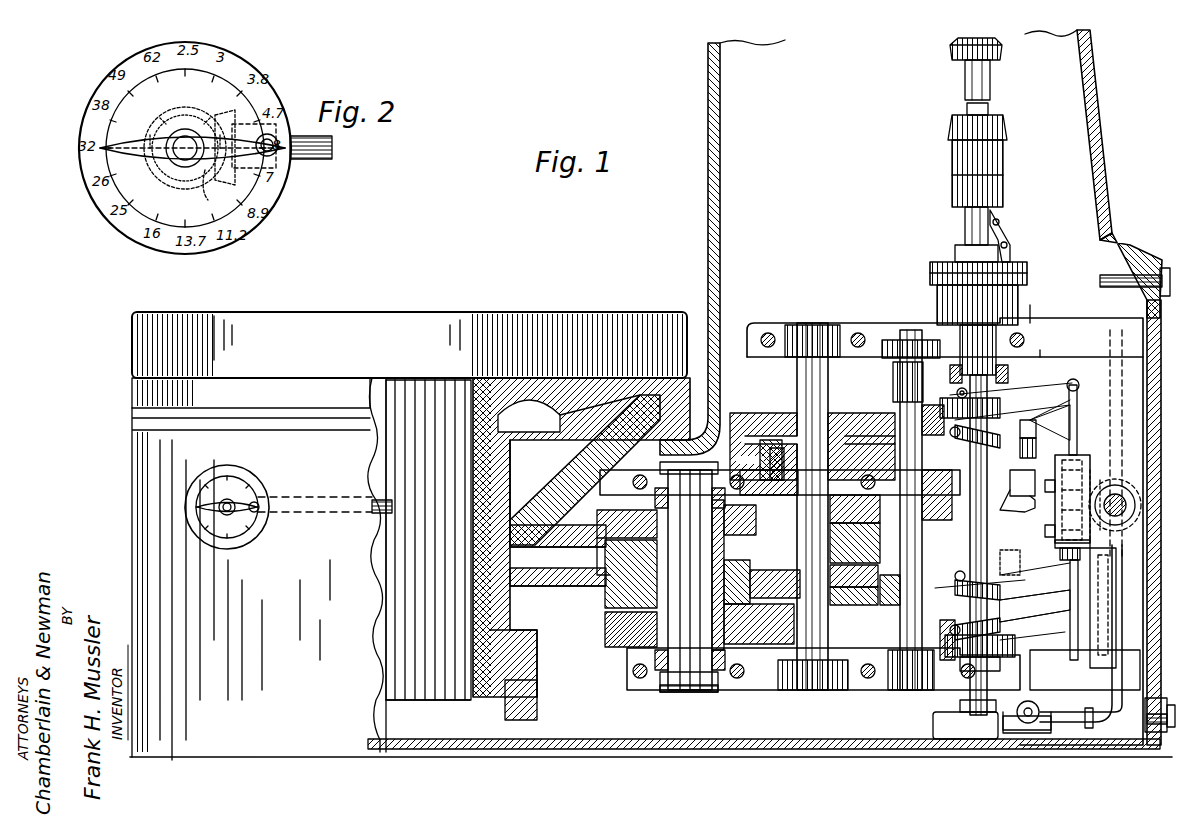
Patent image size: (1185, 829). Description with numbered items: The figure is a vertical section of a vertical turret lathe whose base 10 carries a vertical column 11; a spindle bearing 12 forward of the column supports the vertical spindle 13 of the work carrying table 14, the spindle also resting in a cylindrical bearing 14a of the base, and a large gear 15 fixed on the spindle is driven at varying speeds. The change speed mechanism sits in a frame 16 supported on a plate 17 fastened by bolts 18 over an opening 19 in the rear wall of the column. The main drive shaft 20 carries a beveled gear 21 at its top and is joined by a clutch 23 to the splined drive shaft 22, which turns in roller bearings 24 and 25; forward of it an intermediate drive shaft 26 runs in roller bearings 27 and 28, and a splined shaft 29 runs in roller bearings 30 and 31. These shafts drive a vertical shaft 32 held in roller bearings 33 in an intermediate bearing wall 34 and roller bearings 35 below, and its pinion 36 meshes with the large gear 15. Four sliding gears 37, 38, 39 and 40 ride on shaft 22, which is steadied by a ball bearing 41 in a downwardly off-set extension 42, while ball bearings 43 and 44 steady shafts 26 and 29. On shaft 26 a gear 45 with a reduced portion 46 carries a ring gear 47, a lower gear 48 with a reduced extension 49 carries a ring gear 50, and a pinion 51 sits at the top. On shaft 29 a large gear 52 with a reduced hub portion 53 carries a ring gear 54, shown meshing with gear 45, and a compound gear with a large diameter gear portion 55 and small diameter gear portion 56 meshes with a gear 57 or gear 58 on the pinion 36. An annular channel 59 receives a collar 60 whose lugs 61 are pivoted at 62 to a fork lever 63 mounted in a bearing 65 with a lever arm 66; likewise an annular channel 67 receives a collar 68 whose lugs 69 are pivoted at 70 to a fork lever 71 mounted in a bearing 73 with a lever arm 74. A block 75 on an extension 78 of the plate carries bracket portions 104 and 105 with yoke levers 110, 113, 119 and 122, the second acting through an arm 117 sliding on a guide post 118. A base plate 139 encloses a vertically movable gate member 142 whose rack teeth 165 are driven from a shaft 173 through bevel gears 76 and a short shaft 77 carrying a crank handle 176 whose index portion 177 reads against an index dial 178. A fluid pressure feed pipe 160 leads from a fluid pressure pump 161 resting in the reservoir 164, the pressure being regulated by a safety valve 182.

In FIG. 1, the base 10 is at (335, 745).
In FIG. 1, the vertical column 11 is at (720, 172).
In FIG. 1, the spindle bearing 12 is at (522, 455).
In FIG. 1, the vertical spindle 13 is at (500, 486).
In FIG. 1, the work carrying table 14 is at (392, 330).
In FIG. 1, the cylindrical bearing 14a is at (500, 645).
In FIG. 1, the large gear 15 is at (520, 588).
In FIG. 1, the frame 16 is at (1062, 330).
In FIG. 1, the plate 17 is at (1148, 420).
In FIG. 1, the bolts 18 is at (1145, 265).
In FIG. 1, the opening 19 is at (1108, 325).
In FIG. 1, the main drive shaft 20 is at (965, 80).
In FIG. 1, the beveled gear 21 is at (950, 46).
In FIG. 1, the drive shaft 22 is at (1000, 345).
In FIG. 1, the clutch 23 is at (1010, 270).
In FIG. 1, the roller bearing 24 is at (1010, 372).
In FIG. 1, the roller bearing 25 is at (1040, 684).
In FIG. 1, the intermediate drive shaft 26 is at (902, 402).
In FIG. 1, the roller bearing 27 is at (890, 340).
In FIG. 1, the roller bearing 28 is at (900, 690).
In FIG. 1, the splined shaft 29 is at (797, 378).
In FIG. 1, the roller bearing 30 is at (800, 325).
In FIG. 1, the roller bearing 31 is at (830, 690).
In FIG. 1, the vertical shaft 32 is at (685, 655).
In FIG. 1, the roller bearings 33 is at (672, 475).
In FIG. 1, the intermediate bearing supporting wall 34 is at (757, 500).
In FIG. 1, the roller bearings 35 is at (718, 692).
In FIG. 1, the pinion 36 is at (724, 556).
In FIG. 1, the gear 37 is at (1000, 420).
In FIG. 1, the gear 38 is at (1000, 480).
In FIG. 1, the gear 39 is at (1010, 605).
In FIG. 1, the gear 40 is at (1015, 645).
In FIG. 1, the ball bearing 41 is at (948, 562).
In FIG. 1, the downwardly off-set extension 42 is at (1020, 570).
In FIG. 1, the ball bearing 43 is at (900, 528).
In FIG. 1, the ball bearing 44 is at (760, 520).
In FIG. 1, the gear 45 is at (952, 405).
In FIG. 1, the reduced portion 46 is at (850, 500).
In FIG. 1, the ring gear 47 is at (895, 548).
In FIG. 1, the gear 48 is at (856, 570).
In FIG. 1, the reduced extension 49 is at (900, 680).
In FIG. 1, the ring gear 50 is at (885, 660).
In FIG. 1, the pinion 51 is at (895, 368).
In FIG. 1, the large gear 52 is at (780, 413).
In FIG. 1, the reduced hub portion 53 is at (848, 415).
In FIG. 1, the ring gear 54 is at (760, 448).
In FIG. 1, the large diameter gear portion 55 is at (768, 572).
In FIG. 1, the small diameter gear portion 56 is at (800, 690).
In FIG. 1, the gear 57 is at (597, 520).
In FIG. 1, the gear 58 is at (603, 630).
In FIG. 1, the annular channel 59 is at (768, 508).
In FIG. 1, the collar 60 is at (772, 465).
In FIG. 1, the lugs 61 is at (786, 418).
In FIG. 1, the pivotal connection 62 is at (830, 410).
In FIG. 1, the fork lever 63 is at (862, 410).
In FIG. 1, the bearing 65 is at (945, 430).
In FIG. 1, the lever arm 66 is at (1069, 395).
In FIG. 1, the annular channel 67 is at (760, 585).
In FIG. 1, the collar 68 is at (775, 603).
In FIG. 1, the lugs 69 is at (836, 566).
In FIG. 1, the pivotal connection 70 is at (815, 690).
In FIG. 1, the fork lever 71 is at (885, 590).
In FIG. 1, the bearing 73 is at (955, 588).
In FIG. 1, the lever arm 74 is at (1040, 578).
In FIG. 1, the frame or block 75 is at (1080, 470).
In FIG. 2, the bevel gears 76 is at (205, 178).
In FIG. 2, the short shaft 77 is at (185, 156).
In FIG. 1, the short shaft 77 is at (232, 500).
In FIG. 1, the extension 78 is at (1112, 485).
In FIG. 1, the bracket portion 104 is at (1035, 475).
In FIG. 1, the bracket portion 105 is at (1060, 585).
In FIG. 1, the yoke lever 110 is at (1030, 422).
In FIG. 1, the yoke lever 113 is at (1072, 418).
In FIG. 1, the arm 117 is at (1025, 498).
In FIG. 1, the guide post 118 is at (1050, 494).
In FIG. 1, the yoke lever 119 is at (1030, 606).
In FIG. 1, the yoke lever 122 is at (1020, 636).
In FIG. 1, the base plate 139 is at (1105, 470).
In FIG. 1, the gate member 142 is at (1116, 598).
In FIG. 1, the fluid pressure feed pipe 160 is at (1116, 565).
In FIG. 1, the fluid pressure pump 161 is at (960, 730).
In FIG. 1, the reservoir 164 is at (1072, 740).
In FIG. 1, the rack teeth 165 is at (1116, 618).
In FIG. 2, the shaft 173 is at (332, 140).
In FIG. 1, the shaft 173 is at (385, 498).
In FIG. 2, the crank handle 176 is at (276, 152).
In FIG. 2, the index portion 177 is at (102, 150).
In FIG. 2, the index dial 178 is at (215, 96).
In FIG. 1, the safety valve 182 is at (1028, 730).